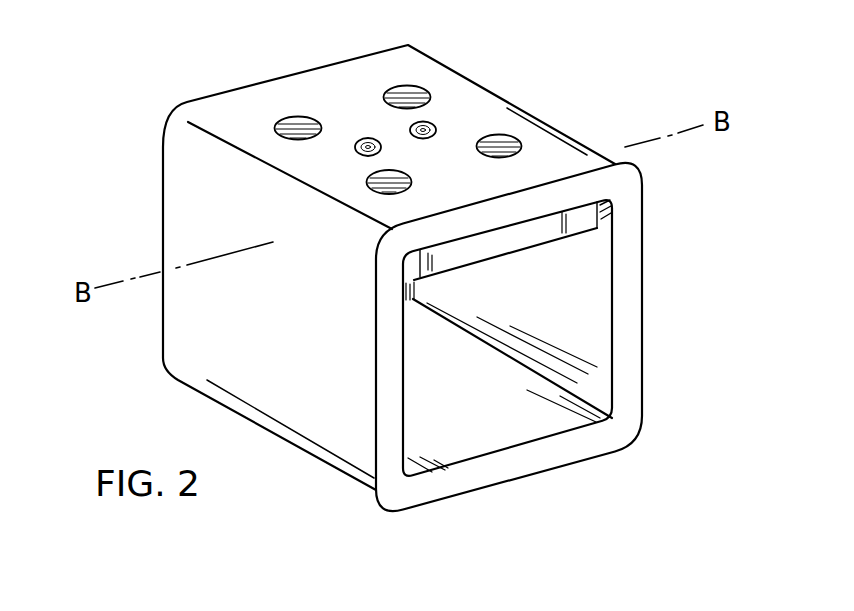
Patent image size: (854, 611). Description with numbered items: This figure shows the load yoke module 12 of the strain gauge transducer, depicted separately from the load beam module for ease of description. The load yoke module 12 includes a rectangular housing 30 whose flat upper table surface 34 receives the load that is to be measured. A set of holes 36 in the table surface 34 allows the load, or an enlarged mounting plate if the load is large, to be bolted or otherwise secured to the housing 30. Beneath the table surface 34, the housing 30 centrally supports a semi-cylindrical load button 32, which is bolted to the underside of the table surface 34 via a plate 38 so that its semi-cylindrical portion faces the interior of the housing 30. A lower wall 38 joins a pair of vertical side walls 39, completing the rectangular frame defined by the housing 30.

The load yoke module 12 is at (121, 356).
The rectangular housing 30 is at (668, 334).
The load button 32 is at (414, 303).
The table surface 34 is at (455, 103).
The holes 36 is at (477, 145).
The plate 38 is at (575, 222).
The vertical side walls 39 is at (398, 353).